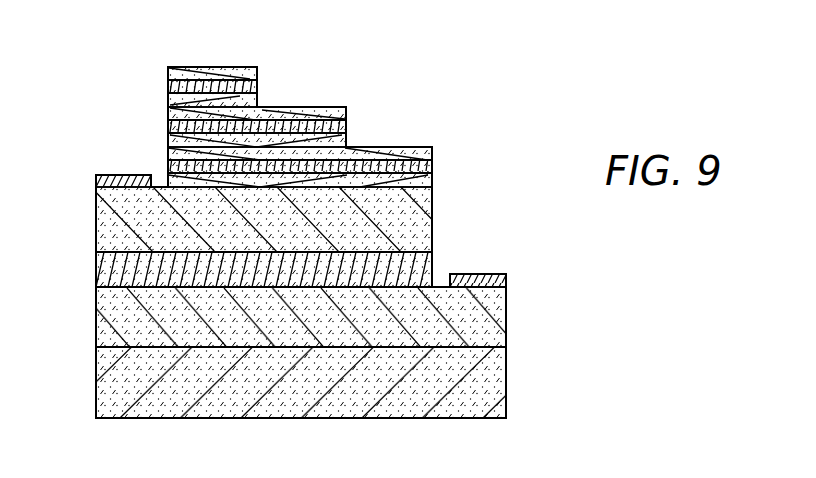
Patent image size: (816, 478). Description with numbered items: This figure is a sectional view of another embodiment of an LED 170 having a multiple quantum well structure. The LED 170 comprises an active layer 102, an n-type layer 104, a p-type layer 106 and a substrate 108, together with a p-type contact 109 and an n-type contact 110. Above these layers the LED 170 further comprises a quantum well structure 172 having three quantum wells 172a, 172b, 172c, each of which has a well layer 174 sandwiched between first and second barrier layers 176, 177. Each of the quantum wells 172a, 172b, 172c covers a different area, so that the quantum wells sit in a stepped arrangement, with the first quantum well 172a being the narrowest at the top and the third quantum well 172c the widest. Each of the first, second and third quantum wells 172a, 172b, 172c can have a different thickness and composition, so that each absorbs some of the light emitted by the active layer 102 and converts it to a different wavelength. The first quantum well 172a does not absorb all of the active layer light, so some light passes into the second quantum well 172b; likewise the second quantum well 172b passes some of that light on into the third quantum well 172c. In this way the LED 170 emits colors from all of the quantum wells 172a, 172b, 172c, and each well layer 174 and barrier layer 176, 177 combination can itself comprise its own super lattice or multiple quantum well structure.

The LED 170 is at (555, 120).
The quantum well structure 172 is at (298, 97).
The first quantum well 172a is at (209, 69).
The second quantum well 172b is at (335, 107).
The third quantum well 172c is at (422, 147).
The well layer 174 is at (258, 87).
The first barrier layer 176 is at (168, 73).
The second barrier layer 177 is at (168, 100).
The p-type contact 109 is at (96, 182).
The n-type contact 110 is at (488, 273).
The p-type layer 106 is at (96, 222).
The active layer 102 is at (96, 272).
The n-type layer 104 is at (96, 317).
The substrate 108 is at (96, 387).